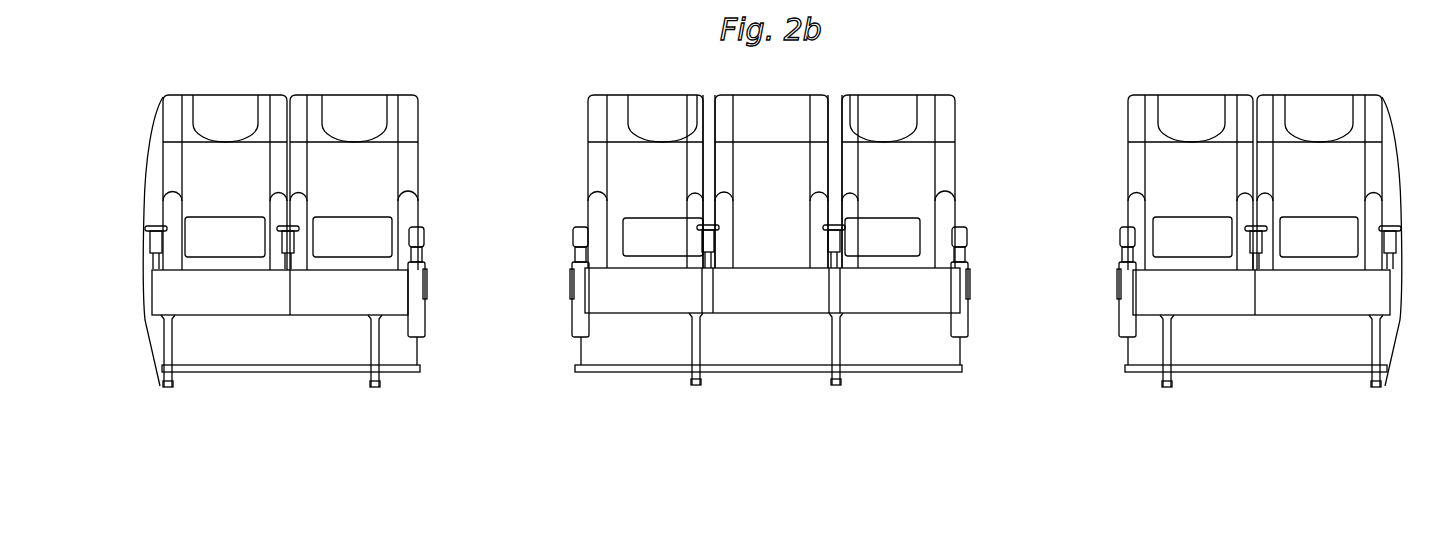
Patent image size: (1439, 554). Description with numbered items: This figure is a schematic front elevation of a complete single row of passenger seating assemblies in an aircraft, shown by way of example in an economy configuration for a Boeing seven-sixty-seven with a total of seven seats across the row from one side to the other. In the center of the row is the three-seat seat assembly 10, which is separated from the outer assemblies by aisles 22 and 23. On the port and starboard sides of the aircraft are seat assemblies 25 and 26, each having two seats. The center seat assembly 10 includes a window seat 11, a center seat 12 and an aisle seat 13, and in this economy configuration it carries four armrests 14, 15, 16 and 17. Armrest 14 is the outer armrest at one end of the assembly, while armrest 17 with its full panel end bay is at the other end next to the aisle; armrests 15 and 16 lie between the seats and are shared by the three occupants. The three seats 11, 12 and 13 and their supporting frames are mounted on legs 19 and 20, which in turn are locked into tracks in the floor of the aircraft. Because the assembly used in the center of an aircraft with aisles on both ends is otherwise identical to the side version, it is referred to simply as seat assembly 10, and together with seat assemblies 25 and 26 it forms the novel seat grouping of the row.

The seat assembly 10 is at (563, 93).
The window seat 11 is at (664, 192).
The center seat 12 is at (783, 195).
The aisle seat 13 is at (908, 190).
The armrest 14 is at (578, 252).
The armrest 15 is at (708, 245).
The armrest 16 is at (832, 245).
The armrest 17 is at (960, 252).
The leg 19 is at (695, 352).
The leg 20 is at (838, 345).
The aisle 22 is at (510, 233).
The aisle 23 is at (1048, 240).
The seat assembly 25 is at (126, 262).
The seat assembly 26 is at (1403, 122).